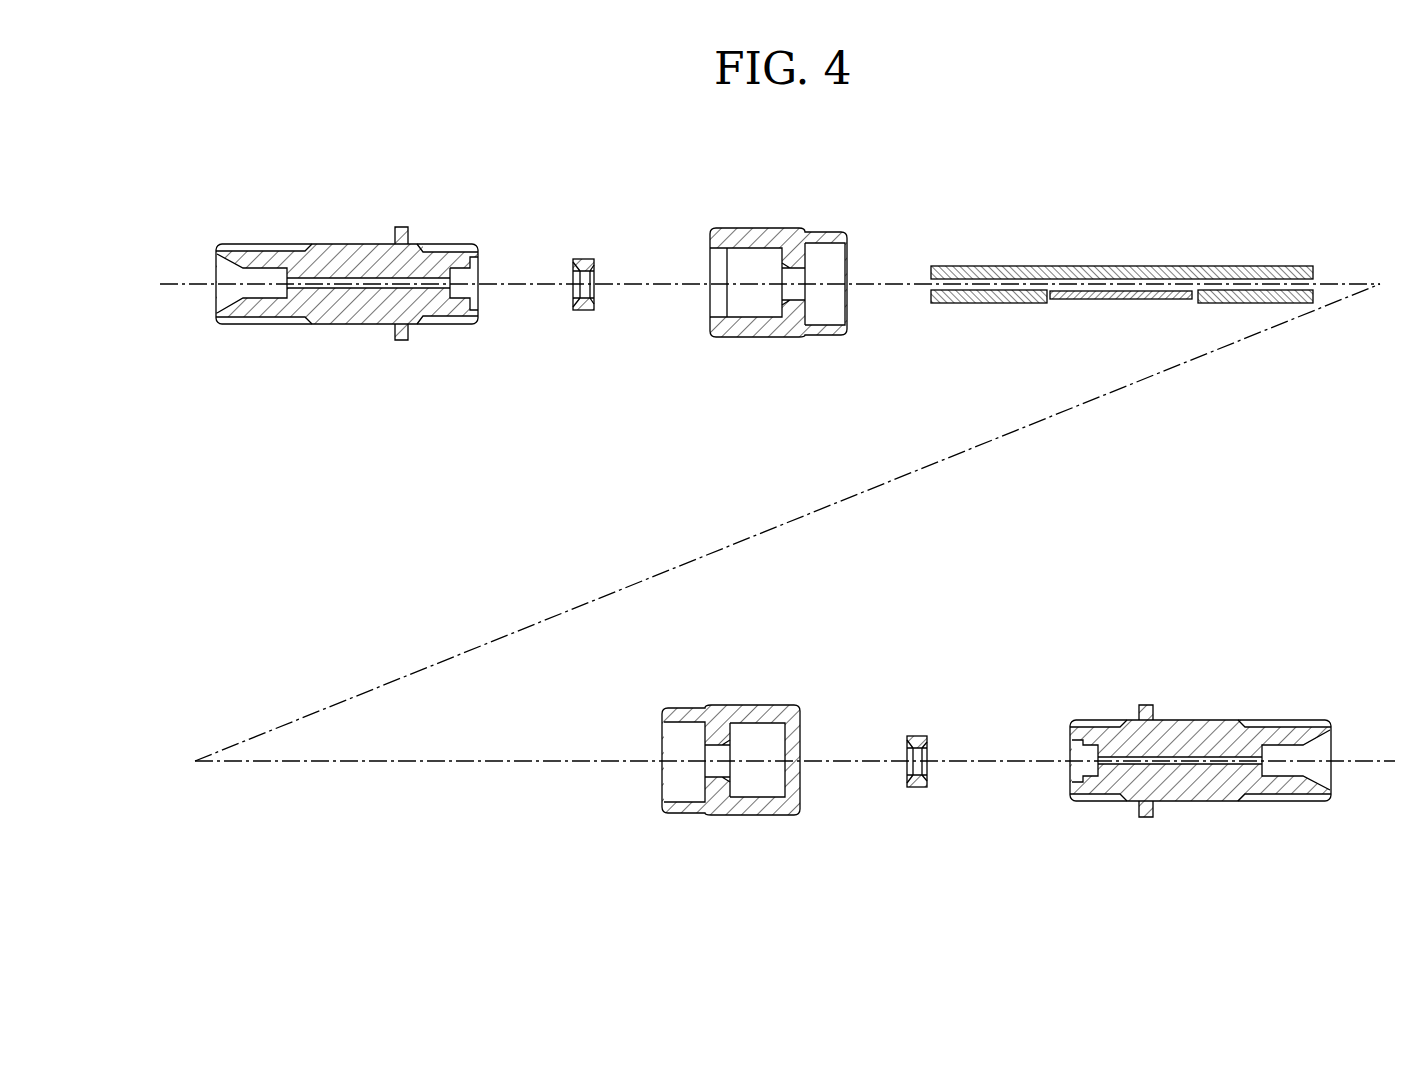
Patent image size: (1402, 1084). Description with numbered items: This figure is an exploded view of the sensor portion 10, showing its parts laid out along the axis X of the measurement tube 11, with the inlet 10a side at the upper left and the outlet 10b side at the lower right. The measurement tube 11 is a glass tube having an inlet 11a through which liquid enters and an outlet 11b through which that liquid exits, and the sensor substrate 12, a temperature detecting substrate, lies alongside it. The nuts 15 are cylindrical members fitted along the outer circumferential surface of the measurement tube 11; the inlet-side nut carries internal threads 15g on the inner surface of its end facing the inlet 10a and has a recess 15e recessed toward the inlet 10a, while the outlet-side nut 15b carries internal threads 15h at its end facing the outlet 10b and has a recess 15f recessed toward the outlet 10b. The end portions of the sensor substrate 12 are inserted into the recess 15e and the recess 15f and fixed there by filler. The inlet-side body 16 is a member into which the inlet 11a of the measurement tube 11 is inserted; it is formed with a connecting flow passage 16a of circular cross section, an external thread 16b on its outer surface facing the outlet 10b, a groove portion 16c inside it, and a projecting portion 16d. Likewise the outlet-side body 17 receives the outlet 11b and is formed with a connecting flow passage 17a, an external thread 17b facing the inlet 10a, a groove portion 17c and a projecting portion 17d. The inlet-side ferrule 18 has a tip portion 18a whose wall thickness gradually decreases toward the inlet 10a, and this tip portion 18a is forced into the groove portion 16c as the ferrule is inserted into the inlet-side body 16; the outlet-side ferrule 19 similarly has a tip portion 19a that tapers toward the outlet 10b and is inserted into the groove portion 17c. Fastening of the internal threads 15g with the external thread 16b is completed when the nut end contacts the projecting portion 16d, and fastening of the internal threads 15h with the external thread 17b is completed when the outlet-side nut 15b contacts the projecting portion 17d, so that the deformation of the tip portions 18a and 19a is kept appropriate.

The sensor portion 10 is at (1290, 176).
The inlet 10a is at (217, 283).
The outlet 10b is at (1333, 750).
The measurement tube 11 is at (1138, 284).
The inlet 11a is at (930, 272).
The outlet 11b is at (1316, 272).
The sensor substrate 12 is at (1128, 299).
The nuts 15 is at (790, 333).
The outlet-side nut 15b is at (742, 798).
The recess 15e is at (829, 311).
The recess 15f is at (667, 790).
The internal threads 15g is at (720, 305).
The internal threads 15h is at (772, 779).
The inlet-side body 16 is at (330, 275).
The connecting flow passage 16a is at (353, 290).
The external thread 16b is at (434, 244).
The groove portion 16c is at (483, 310).
The projecting portion 16d is at (401, 227).
The outlet-side body 17 is at (1192, 766).
The connecting flow passage 17a is at (1195, 770).
The external thread 17b is at (1095, 720).
The groove portion 17c is at (1068, 742).
The projecting portion 17d is at (1147, 705).
The inlet-side ferrule 18 is at (569, 272).
The tip portion 18a is at (571, 302).
The outlet-side ferrule 19 is at (960, 798).
The tip portion 19a is at (931, 778).
The axis X is at (937, 460).